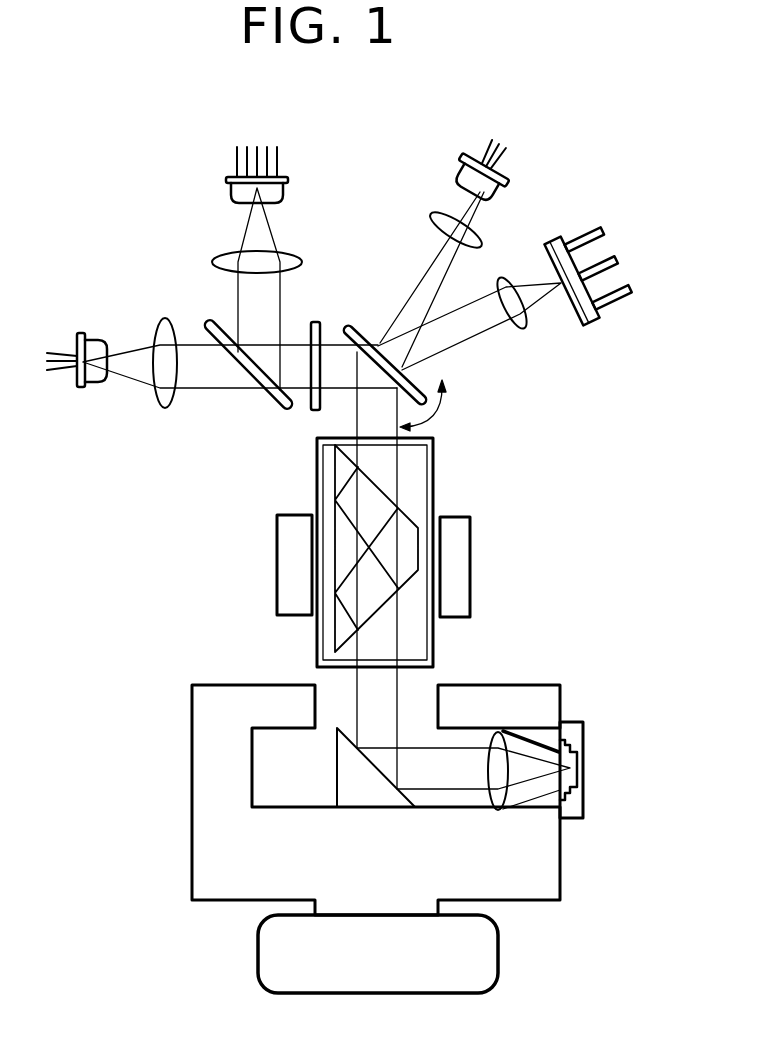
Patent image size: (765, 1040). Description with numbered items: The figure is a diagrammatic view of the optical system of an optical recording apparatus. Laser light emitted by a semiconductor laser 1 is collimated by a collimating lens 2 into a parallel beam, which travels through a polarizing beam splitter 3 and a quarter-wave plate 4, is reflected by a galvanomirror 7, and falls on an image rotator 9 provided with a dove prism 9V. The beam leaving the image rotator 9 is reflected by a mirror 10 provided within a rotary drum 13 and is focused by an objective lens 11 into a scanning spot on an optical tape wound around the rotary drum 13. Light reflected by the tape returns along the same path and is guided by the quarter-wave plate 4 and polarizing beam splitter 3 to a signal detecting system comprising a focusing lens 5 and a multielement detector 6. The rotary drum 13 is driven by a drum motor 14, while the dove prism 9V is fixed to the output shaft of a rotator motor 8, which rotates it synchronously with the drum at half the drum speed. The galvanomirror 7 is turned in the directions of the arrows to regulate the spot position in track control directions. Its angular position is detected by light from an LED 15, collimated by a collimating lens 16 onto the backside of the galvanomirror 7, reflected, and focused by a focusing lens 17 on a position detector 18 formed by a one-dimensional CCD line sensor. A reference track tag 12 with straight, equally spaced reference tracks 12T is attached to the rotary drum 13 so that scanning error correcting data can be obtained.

The semiconductor laser 1 is at (82, 390).
The collimating lens 2 is at (175, 395).
The polarizing beam splitter 3 is at (207, 324).
The quarter-wave plate 4 is at (317, 322).
The focusing lens 5 is at (218, 262).
The multielement detector 6 is at (232, 197).
The galvanomirror 7 is at (358, 328).
The rotator motor 8 is at (472, 565).
The image rotator 9 is at (446, 513).
The dove prism 9V is at (400, 510).
The mirror 10 is at (337, 776).
The objective lens 11 is at (503, 733).
The reference track tag 12 is at (584, 773).
The reference tracks 12T is at (583, 752).
The rotary drum 13 is at (192, 776).
The drum motor 14 is at (498, 975).
The LED 15 is at (506, 181).
The collimating lens 16 is at (485, 238).
The focusing lens 17 is at (525, 328).
The position detector 18 is at (590, 322).